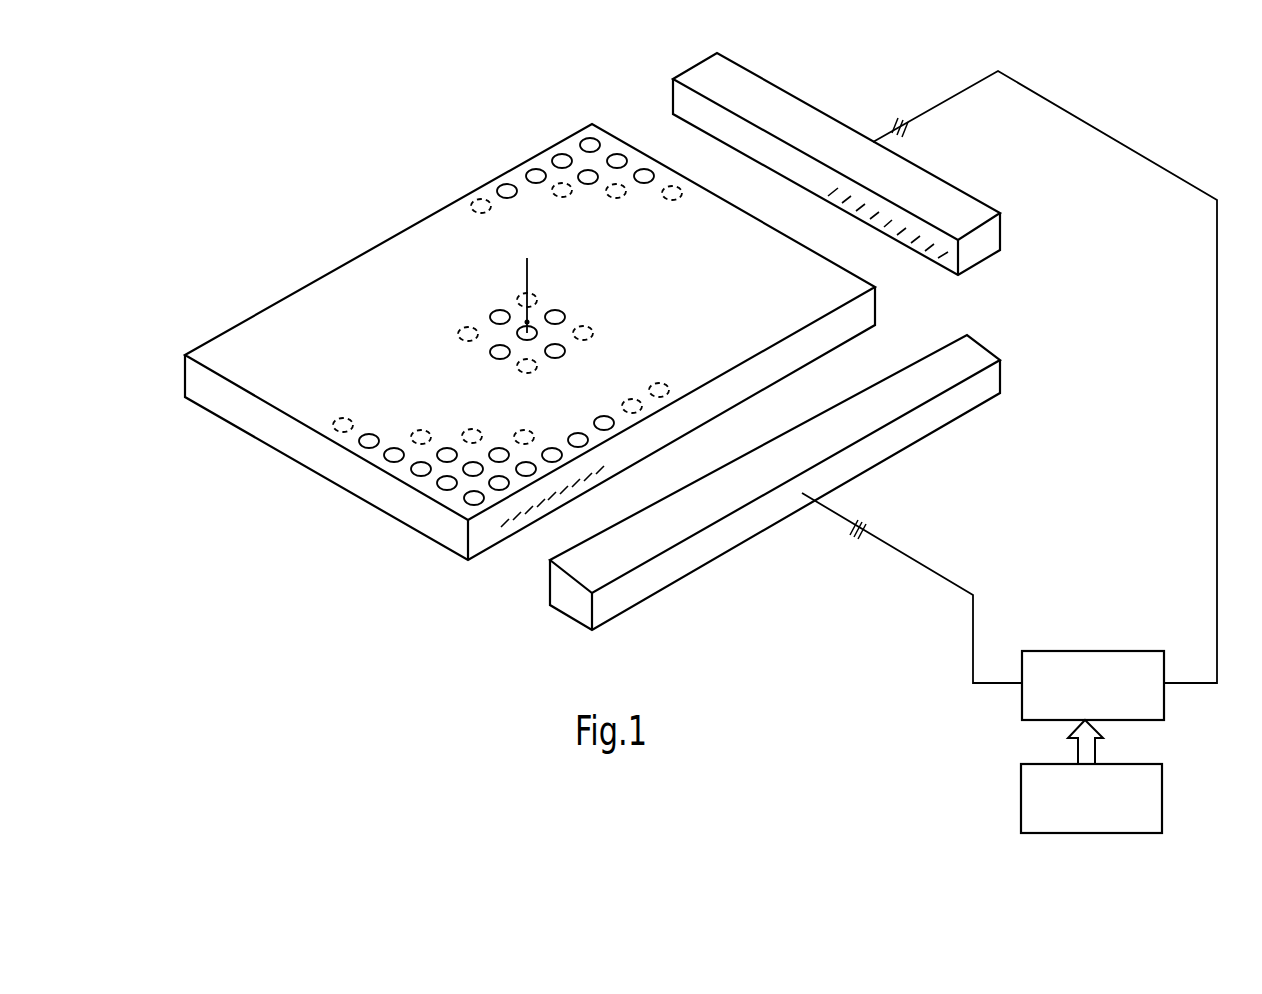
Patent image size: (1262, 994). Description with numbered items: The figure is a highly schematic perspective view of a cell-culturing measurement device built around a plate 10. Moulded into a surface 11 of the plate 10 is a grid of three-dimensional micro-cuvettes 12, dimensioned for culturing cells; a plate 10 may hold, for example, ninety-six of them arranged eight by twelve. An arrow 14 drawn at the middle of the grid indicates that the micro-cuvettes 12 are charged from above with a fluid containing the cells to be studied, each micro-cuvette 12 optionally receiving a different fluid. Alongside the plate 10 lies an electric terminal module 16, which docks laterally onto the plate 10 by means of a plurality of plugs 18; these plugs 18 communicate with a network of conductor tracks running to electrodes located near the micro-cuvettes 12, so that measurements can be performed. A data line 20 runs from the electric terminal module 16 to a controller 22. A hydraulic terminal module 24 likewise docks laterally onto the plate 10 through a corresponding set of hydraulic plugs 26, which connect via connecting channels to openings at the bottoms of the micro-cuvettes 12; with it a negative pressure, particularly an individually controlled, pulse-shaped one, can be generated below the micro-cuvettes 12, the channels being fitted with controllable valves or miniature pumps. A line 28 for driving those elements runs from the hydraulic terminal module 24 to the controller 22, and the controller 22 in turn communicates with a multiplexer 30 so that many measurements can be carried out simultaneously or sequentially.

The plate 10 is at (420, 184).
The surface 11 is at (367, 272).
The micro-cuvettes 12 is at (505, 186).
The arrow 14 is at (528, 272).
The electric terminal module 16 is at (778, 102).
The plugs 18 is at (945, 248).
The data line 20 is at (927, 107).
The controller 22 is at (1098, 668).
The hydraulic terminal module 24 is at (622, 595).
The hydraulic plugs 26 is at (497, 525).
The line 28 is at (917, 560).
The multiplexer 30 is at (1152, 790).